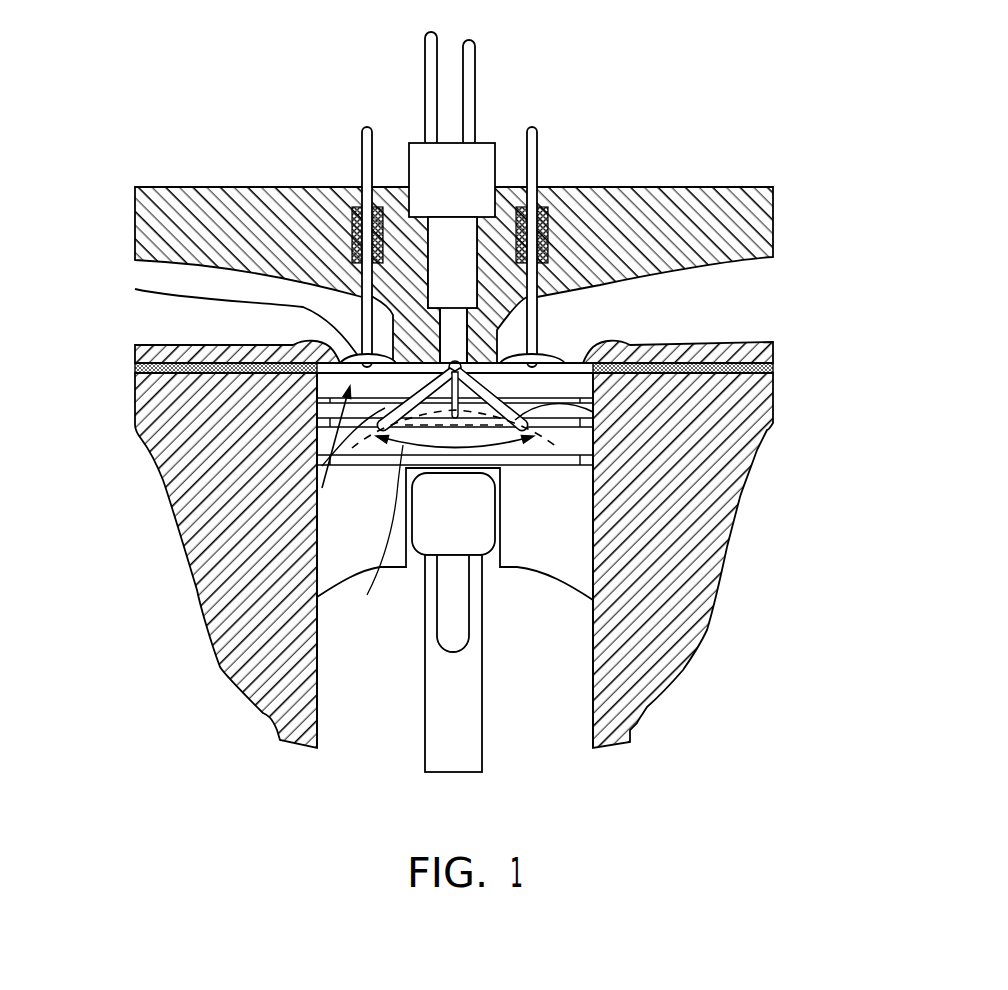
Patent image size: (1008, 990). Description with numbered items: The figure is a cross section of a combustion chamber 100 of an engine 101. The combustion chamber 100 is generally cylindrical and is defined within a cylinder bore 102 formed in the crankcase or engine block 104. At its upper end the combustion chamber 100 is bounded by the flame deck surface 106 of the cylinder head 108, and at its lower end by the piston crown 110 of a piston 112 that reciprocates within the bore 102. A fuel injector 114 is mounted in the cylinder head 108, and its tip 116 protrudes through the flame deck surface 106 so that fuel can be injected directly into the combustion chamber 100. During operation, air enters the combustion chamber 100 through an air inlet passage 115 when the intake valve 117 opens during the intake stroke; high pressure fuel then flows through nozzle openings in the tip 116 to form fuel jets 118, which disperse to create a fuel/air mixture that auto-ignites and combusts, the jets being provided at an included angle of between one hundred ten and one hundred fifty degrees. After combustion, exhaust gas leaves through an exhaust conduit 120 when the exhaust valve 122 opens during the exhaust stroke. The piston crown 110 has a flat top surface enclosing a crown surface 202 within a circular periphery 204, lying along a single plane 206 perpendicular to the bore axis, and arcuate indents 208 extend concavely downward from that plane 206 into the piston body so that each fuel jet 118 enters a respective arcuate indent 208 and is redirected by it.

The combustion chamber 100 is at (350, 390).
The engine 101 is at (776, 135).
The cylinder bore 102 is at (593, 673).
The engine block 104 is at (722, 537).
The flame deck surface 106 is at (597, 372).
The cylinder head 108 is at (760, 223).
The piston crown 110 is at (340, 400).
The piston 112 is at (569, 524).
The fuel injector 114 is at (483, 152).
The air inlet passage 115 is at (135, 320).
The tip 116 is at (455, 362).
The intake valve 117 is at (157, 313).
The fuel jet 118 is at (593, 412).
The exhaust conduit 120 is at (753, 293).
The exhaust valve 122 is at (537, 360).
The crown surface 202 is at (345, 440).
The circular periphery 204 is at (322, 488).
The plane 206 is at (350, 375).
The arcuate indent 208 is at (322, 466).